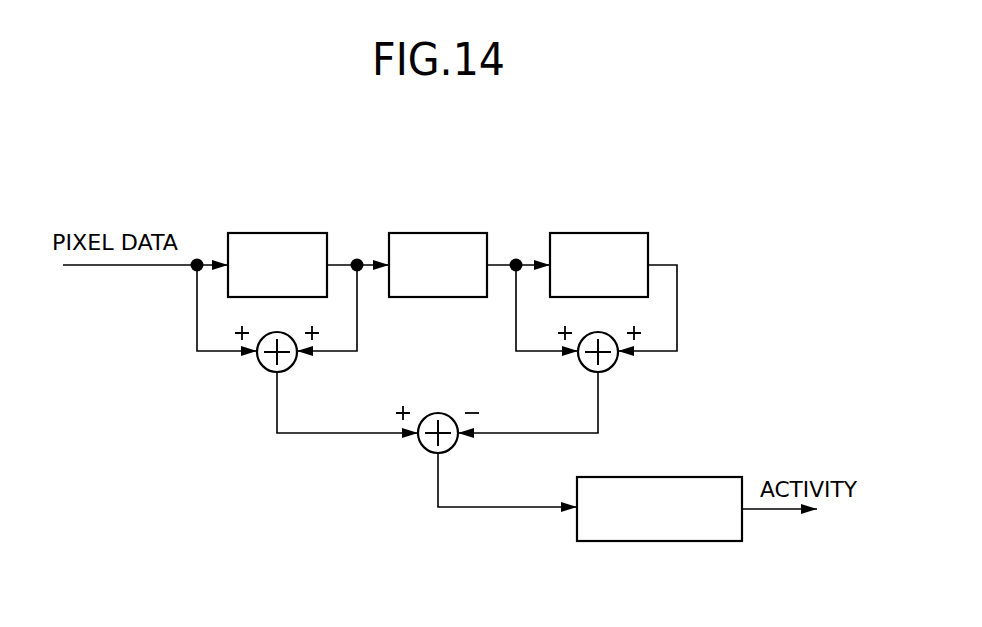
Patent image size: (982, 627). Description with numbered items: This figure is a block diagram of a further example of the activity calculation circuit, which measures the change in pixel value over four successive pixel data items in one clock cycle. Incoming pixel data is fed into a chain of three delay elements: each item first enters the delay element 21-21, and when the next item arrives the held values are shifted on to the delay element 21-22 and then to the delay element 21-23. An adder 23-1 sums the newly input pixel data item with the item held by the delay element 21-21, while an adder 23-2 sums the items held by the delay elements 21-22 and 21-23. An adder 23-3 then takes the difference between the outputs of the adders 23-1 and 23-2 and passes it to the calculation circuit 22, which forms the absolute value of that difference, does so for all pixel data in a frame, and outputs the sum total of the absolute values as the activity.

The delay element 21-21 is at (280, 233).
The delay element 21-22 is at (442, 233).
The delay element 21-23 is at (603, 233).
The adder 23-1 is at (264, 367).
The adder 23-2 is at (614, 367).
The adder 23-3 is at (420, 445).
The calculation circuit 22 is at (653, 541).